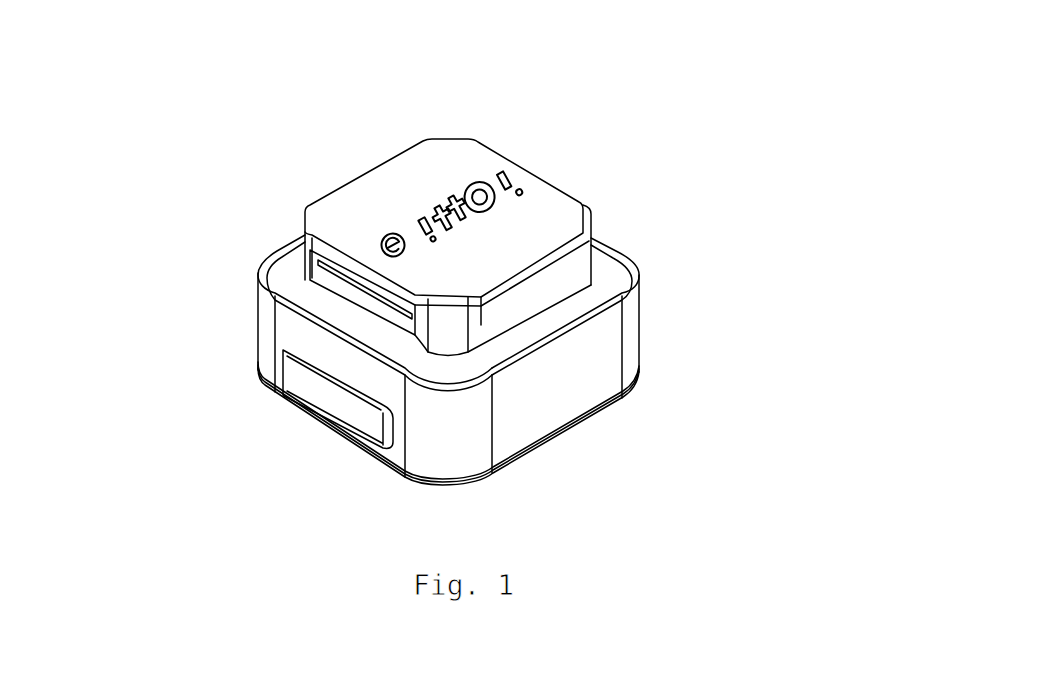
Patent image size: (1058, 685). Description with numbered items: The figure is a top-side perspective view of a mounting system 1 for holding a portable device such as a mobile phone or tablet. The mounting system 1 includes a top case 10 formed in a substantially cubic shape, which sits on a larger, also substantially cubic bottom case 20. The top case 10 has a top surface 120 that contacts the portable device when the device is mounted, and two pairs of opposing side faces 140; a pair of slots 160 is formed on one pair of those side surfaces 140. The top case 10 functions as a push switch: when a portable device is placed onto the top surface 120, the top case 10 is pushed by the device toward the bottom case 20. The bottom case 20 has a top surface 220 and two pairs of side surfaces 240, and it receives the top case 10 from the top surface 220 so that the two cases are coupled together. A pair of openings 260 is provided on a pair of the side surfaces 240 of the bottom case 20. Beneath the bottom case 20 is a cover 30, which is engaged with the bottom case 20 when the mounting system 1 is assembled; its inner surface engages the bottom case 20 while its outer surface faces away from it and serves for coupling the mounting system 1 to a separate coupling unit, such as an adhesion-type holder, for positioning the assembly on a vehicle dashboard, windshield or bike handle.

The mounting system 1 is at (627, 152).
The top case 10 is at (565, 281).
The bottom case 20 is at (598, 362).
The cover 30 is at (590, 417).
The top surface 120 is at (334, 214).
The side faces 140 is at (317, 283).
The slots 160 is at (317, 262).
The top surface 220 is at (610, 257).
The side surfaces 240 is at (268, 326).
The openings 260 is at (290, 352).